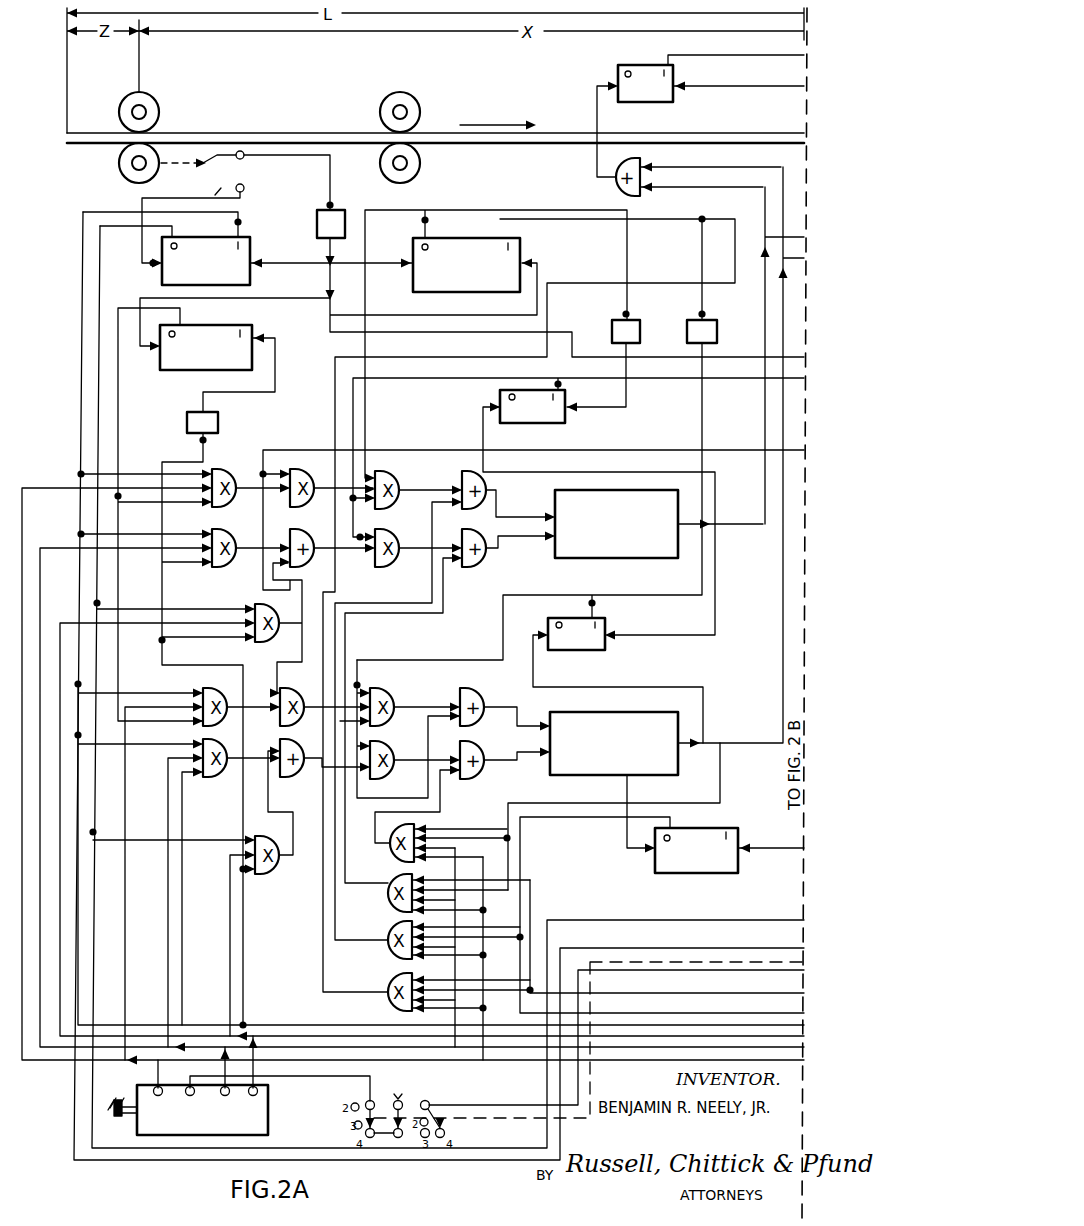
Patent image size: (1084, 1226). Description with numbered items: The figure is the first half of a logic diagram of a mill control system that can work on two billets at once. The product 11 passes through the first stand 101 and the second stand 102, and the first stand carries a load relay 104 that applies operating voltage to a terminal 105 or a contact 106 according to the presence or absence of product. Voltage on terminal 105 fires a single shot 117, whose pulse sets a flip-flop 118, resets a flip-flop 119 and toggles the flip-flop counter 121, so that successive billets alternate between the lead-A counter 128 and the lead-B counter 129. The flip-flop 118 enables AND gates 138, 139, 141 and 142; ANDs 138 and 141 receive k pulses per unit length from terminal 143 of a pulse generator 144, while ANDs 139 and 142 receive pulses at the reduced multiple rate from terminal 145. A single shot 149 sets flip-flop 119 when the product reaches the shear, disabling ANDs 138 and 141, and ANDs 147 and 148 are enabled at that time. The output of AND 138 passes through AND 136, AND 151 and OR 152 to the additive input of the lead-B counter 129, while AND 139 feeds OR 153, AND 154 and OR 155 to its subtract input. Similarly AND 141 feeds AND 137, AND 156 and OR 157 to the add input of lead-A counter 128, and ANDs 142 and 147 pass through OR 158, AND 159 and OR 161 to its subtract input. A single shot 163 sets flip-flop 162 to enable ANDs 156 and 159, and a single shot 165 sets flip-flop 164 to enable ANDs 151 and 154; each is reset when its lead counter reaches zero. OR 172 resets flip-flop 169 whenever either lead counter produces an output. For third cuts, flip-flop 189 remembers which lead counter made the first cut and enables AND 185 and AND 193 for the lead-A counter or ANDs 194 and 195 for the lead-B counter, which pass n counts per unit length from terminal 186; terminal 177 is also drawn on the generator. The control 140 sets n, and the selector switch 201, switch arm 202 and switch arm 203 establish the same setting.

The product 11 is at (100, 138).
The first stand 101 is at (149, 109).
The second stand 102 is at (381, 105).
The load relay 104 is at (205, 170).
The terminal 105 is at (241, 149).
The contact 106 is at (245, 188).
The single shot 117 is at (317, 224).
The flip-flop 118 is at (252, 250).
The flip-flop 119 is at (252, 326).
The flip-flop counter 121 is at (487, 235).
The lead-A counter 128 is at (594, 708).
The lead-B counter 129 is at (630, 564).
The AND gate 136 is at (314, 473).
The AND gate 137 is at (302, 695).
The AND gate 138 is at (234, 474).
The AND gate 139 is at (234, 534).
The control 140 is at (116, 1118).
The AND gate 141 is at (213, 690).
The AND gate 142 is at (224, 775).
The terminal 143 is at (150, 1090).
The pulse generator 144 is at (268, 1128).
The terminal 145 is at (234, 1090).
The AND gate 147 is at (264, 874).
The AND gate 148 is at (260, 646).
The single shot 149 is at (187, 421).
The AND gate 151 is at (402, 477).
The OR gate 152 is at (471, 473).
The OR gate 153 is at (316, 534).
The AND gate 154 is at (404, 535).
The OR gate 155 is at (490, 536).
The AND gate 156 is at (392, 695).
The OR gate 157 is at (485, 695).
The OR gate 158 is at (290, 774).
The AND gate 159 is at (392, 752).
The OR gate 161 is at (485, 752).
The flip-flop 162 is at (548, 622).
The single shot 163 is at (690, 320).
The flip-flop 164 is at (498, 398).
The single shot 165 is at (618, 318).
The flip-flop 169 is at (616, 70).
The OR gate 172 is at (618, 183).
The pulse generator output (n-2)K 177 is at (188, 1090).
The AND gate 185 is at (390, 900).
The terminal 186 is at (261, 1094).
The flip-flop 189 is at (684, 873).
The AND gate 193 is at (396, 856).
The AND gate 194 is at (386, 949).
The AND gate 195 is at (386, 1000).
The selector switch 201 is at (430, 1106).
The switch arm 202 is at (374, 1100).
The switch arm 203 is at (430, 1103).